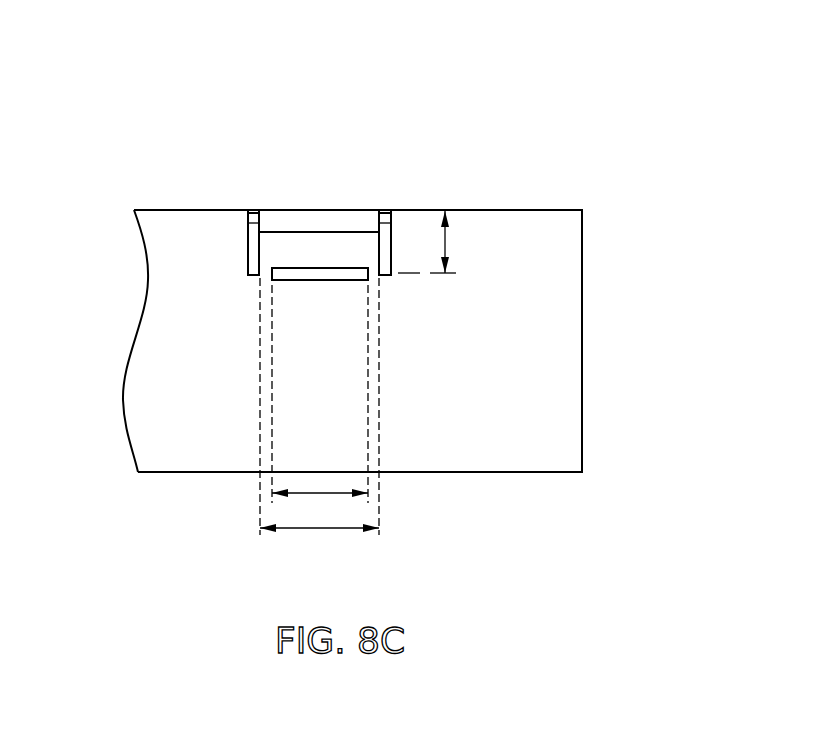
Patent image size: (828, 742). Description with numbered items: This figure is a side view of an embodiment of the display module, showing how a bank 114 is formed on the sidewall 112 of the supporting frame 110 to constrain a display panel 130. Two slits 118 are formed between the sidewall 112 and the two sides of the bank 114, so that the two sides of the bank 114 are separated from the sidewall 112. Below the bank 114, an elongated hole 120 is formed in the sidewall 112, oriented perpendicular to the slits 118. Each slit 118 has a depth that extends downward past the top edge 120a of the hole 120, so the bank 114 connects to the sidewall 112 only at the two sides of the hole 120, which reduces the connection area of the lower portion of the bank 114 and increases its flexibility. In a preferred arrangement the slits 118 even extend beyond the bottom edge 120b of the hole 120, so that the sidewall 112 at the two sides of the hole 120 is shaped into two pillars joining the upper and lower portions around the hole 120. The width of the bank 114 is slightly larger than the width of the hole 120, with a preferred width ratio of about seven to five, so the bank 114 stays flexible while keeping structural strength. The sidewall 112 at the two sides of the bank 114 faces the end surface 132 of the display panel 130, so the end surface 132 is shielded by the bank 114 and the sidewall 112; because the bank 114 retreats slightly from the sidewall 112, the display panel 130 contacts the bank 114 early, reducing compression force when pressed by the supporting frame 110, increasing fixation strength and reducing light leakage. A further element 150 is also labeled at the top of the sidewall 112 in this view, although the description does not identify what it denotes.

The supporting frame 110 is at (402, 306).
The sidewall 112 is at (538, 232).
The bank 114 is at (291, 226).
The slit 118 is at (253, 261).
The hole 120 is at (325, 277).
The top edge of the hole 120a is at (337, 268).
The bottom edge of the hole 120b is at (353, 282).
The display panel 130 is at (246, 212).
The end surface of the display panel 132 is at (388, 212).
The solder layer 150 is at (250, 210).